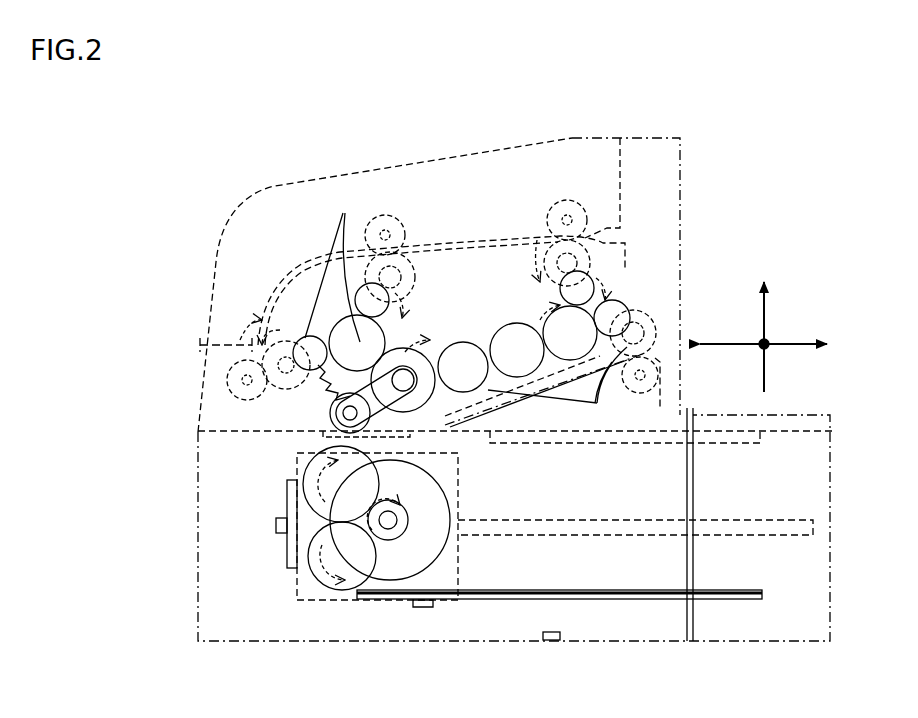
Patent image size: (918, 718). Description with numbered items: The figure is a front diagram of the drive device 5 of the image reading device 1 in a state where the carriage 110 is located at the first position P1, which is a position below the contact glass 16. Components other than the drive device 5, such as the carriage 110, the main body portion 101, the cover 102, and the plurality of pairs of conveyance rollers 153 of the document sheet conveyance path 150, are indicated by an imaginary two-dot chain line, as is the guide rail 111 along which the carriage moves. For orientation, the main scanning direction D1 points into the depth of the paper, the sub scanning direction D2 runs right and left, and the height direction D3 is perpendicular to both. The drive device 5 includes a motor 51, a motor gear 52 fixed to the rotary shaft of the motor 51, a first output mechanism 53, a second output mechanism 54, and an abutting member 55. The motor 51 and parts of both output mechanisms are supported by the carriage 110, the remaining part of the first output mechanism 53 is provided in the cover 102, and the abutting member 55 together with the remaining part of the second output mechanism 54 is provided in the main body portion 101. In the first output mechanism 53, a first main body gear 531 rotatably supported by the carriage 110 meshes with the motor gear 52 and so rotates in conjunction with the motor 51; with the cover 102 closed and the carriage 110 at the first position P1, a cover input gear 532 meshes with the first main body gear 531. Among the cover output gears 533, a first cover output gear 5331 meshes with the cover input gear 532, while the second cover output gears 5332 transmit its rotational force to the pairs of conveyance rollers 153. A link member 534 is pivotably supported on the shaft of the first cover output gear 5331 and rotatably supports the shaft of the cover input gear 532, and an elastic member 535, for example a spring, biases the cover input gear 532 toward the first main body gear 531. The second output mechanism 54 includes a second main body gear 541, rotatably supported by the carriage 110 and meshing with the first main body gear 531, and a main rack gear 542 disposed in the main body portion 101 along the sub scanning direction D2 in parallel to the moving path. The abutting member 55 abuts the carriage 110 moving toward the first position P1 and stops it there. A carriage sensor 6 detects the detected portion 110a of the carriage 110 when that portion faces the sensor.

The image reading device 1 is at (800, 136).
The drive device 5 is at (254, 245).
The carriage sensor 6 is at (560, 640).
The contact glass 16 is at (330, 440).
The motor 51 is at (448, 494).
The motor gear 52 is at (405, 537).
The first output mechanism 53 is at (452, 272).
The second output mechanism 54 is at (785, 553).
The abutting member 55 is at (287, 510).
The main body portion 101 is at (197, 463).
The cover 102 is at (210, 262).
The carriage 110 is at (287, 587).
The detected portion 110a is at (425, 607).
The guide rail 111 is at (712, 515).
The document sheet conveyance path 150 is at (255, 318).
The pairs of conveyance rollers 153 is at (396, 212).
The first main body gear 531 is at (302, 462).
The cover input gear 532 is at (345, 422).
The cover output gears 533 is at (478, 311).
The link member 534 is at (435, 420).
The elastic member 535 is at (330, 400).
The second main body gear 541 is at (300, 573).
The main rack gear 542 is at (612, 588).
The first cover output gear 5331 is at (398, 348).
The second cover output gears 5332 is at (343, 225).
The first position P1 is at (370, 610).
The main scanning direction D1 is at (768, 342).
The sub scanning direction D2 is at (720, 342).
The height direction D3 is at (766, 372).